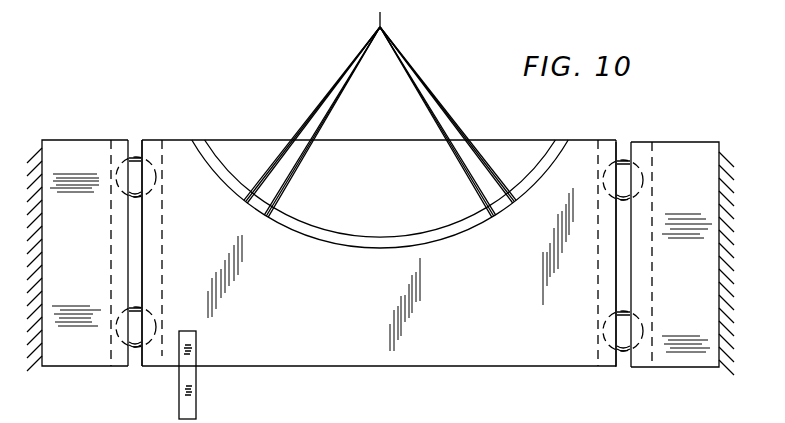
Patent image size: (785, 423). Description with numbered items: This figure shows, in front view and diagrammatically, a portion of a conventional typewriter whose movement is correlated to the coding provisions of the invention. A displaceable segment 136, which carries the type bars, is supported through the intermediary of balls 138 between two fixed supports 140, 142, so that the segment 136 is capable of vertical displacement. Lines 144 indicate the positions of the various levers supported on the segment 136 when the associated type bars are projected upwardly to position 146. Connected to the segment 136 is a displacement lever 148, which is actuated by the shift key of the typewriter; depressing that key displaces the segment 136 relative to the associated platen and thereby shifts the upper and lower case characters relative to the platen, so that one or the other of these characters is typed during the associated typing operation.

The displaceable segment 136 is at (526, 360).
The balls 138 is at (135, 156).
The fixed support 140 is at (80, 360).
The fixed support 142 is at (683, 360).
The lines 144 is at (326, 101).
The position 146 is at (383, 23).
The displacement lever 148 is at (193, 382).